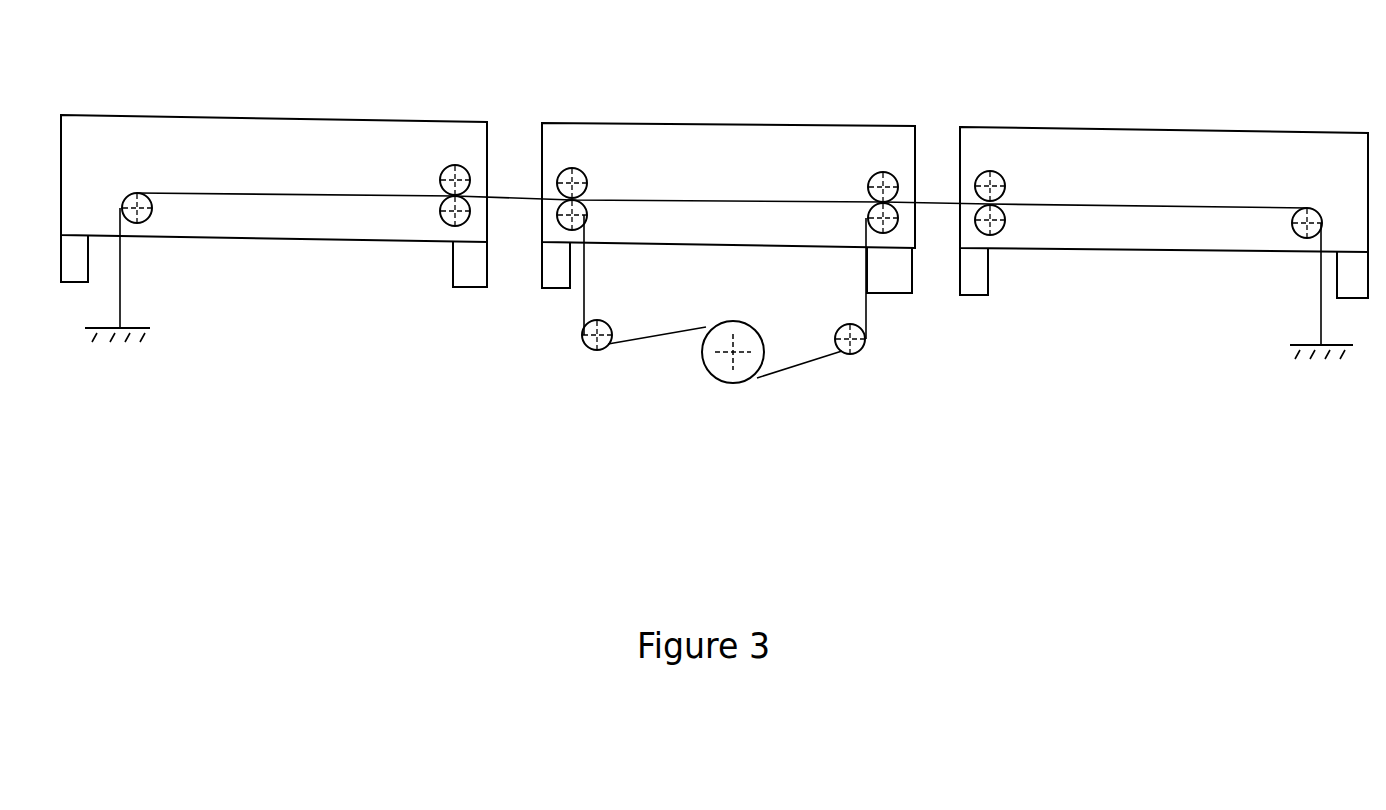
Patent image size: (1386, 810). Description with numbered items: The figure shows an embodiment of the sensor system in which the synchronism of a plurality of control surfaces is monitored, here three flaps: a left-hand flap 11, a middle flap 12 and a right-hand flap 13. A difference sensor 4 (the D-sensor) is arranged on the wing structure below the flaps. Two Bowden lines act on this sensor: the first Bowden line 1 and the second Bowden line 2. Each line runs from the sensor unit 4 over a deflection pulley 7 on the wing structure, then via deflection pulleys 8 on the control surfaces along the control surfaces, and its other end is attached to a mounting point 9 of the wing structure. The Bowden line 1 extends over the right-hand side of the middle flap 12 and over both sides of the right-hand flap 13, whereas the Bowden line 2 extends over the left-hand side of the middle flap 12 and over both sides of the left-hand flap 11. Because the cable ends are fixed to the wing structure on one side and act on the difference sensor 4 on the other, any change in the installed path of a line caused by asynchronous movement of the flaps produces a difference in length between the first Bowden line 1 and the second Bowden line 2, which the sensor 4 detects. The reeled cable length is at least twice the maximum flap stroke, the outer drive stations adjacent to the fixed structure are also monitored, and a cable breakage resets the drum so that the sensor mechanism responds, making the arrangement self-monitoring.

The Bowden line 1 is at (805, 365).
The Bowden line 2 is at (637, 345).
The difference sensor 4 is at (700, 385).
The deflection pulleys 7 is at (588, 347).
The deflection pulleys 8 is at (133, 197).
The mounting points 9 is at (113, 333).
The left-hand flap 11 is at (333, 137).
The middle flap 12 is at (697, 145).
The right-hand flap 13 is at (1117, 143).